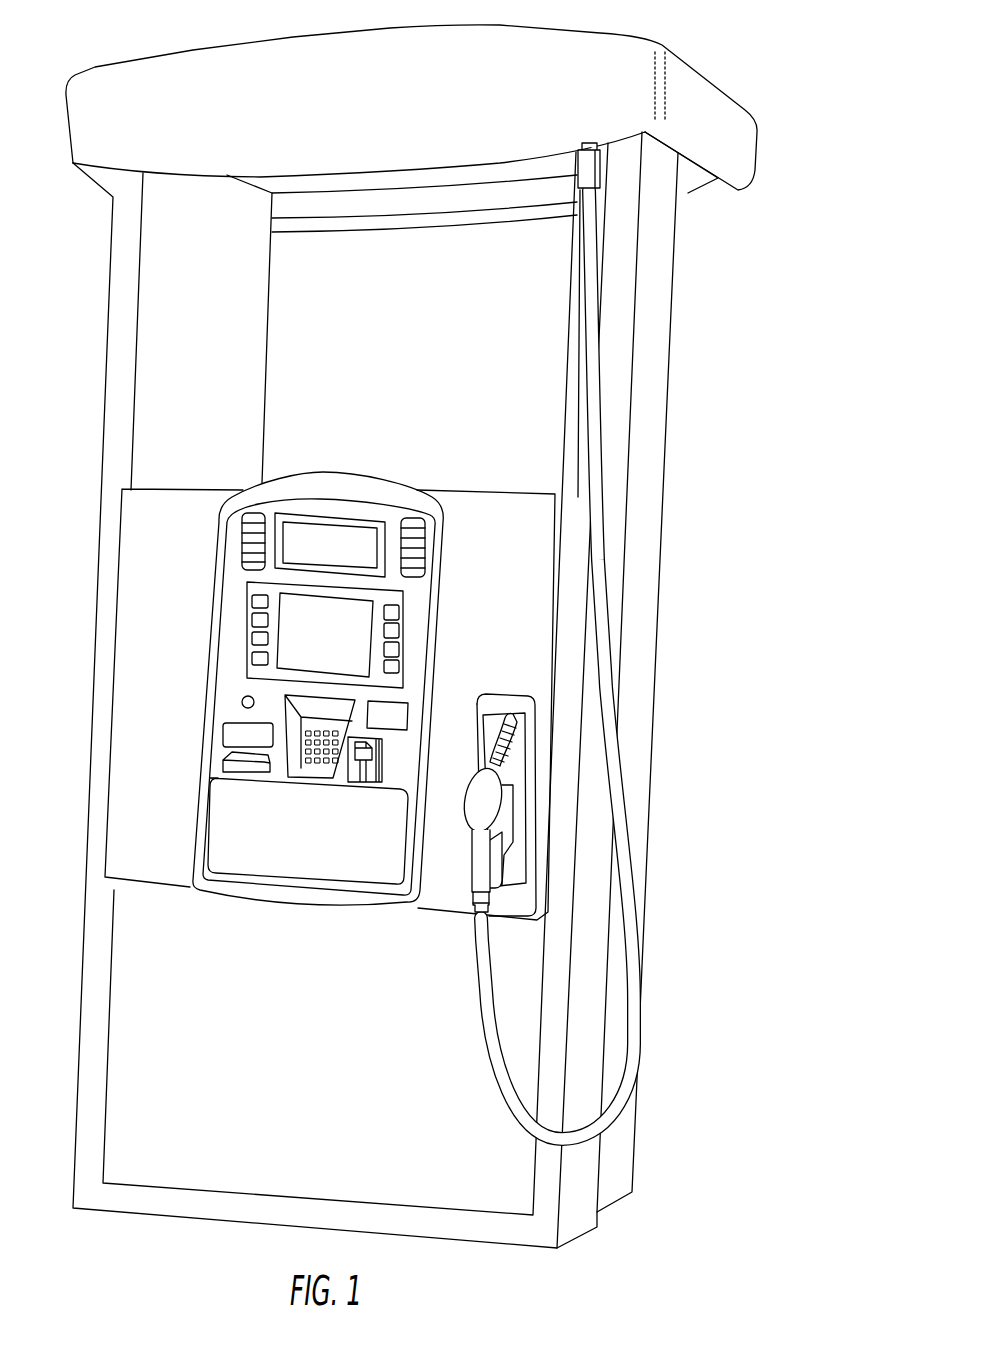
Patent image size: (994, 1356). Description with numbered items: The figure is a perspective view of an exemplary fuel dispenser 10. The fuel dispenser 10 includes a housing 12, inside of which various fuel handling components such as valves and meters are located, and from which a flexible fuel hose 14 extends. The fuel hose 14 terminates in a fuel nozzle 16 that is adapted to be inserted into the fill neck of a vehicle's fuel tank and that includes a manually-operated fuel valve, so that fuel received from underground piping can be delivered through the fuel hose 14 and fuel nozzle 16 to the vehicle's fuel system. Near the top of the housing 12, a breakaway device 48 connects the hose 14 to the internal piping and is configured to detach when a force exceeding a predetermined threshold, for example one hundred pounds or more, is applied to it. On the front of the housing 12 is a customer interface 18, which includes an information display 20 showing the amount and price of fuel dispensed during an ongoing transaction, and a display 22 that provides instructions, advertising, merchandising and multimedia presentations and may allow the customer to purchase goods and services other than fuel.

The fuel dispenser 10 is at (788, 71).
The housing 12 is at (660, 522).
The fuel hose 14 is at (612, 687).
The fuel nozzle 16 is at (481, 871).
The customer interface 18 is at (314, 472).
The information display 20 is at (348, 518).
The display 22 is at (365, 607).
The breakaway device 48 is at (593, 168).